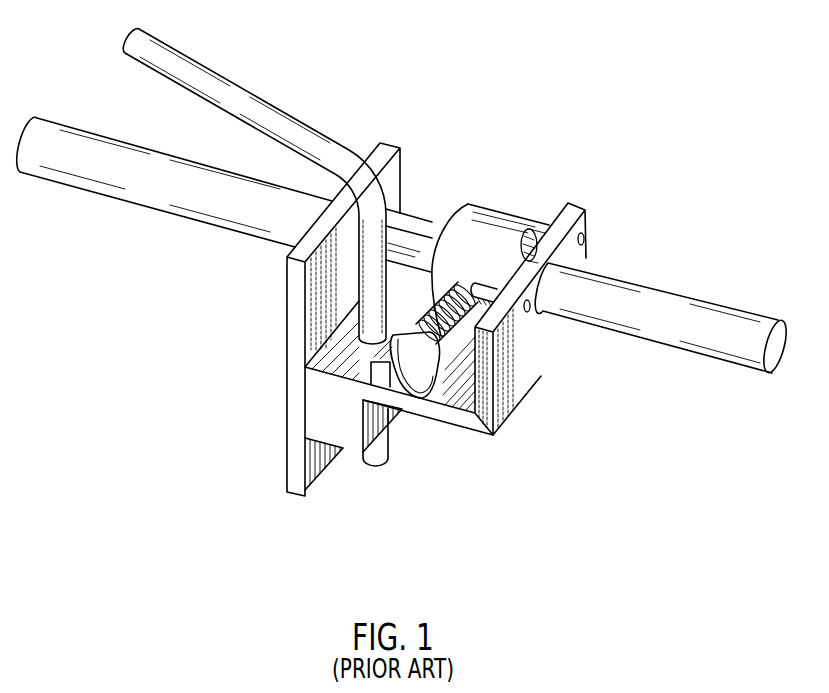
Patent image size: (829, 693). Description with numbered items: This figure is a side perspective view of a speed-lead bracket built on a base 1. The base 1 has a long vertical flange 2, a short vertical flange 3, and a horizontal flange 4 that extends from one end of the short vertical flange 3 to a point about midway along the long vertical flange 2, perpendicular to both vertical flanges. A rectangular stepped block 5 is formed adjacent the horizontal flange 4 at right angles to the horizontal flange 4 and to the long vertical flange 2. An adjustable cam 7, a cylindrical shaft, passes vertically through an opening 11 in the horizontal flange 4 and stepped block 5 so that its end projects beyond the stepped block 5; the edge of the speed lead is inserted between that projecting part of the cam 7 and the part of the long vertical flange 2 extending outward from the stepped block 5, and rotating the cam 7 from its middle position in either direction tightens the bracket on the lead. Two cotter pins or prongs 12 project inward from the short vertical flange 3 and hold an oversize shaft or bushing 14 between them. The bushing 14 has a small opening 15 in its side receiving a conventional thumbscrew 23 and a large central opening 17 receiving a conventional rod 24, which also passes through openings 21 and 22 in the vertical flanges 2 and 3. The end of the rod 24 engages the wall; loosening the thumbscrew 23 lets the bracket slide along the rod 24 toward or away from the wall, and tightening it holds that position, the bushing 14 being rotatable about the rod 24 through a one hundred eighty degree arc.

The base 1 is at (445, 319).
The long vertical flange 2 is at (287, 364).
The short vertical flange 3 is at (588, 226).
The horizontal flange 4 is at (458, 425).
The rectangular stepped block 5 is at (350, 447).
The adjustable cam 7 is at (213, 72).
The opening 11 is at (364, 349).
The cotter pins or prongs 12 is at (540, 226).
The oversize shaft or bushing 14 is at (468, 203).
The small opening 15 is at (445, 288).
The large central opening 17 is at (444, 223).
The opening 21 is at (352, 237).
The opening 22 is at (585, 241).
The thumbscrew 23 is at (418, 406).
The rod 24 is at (149, 206).